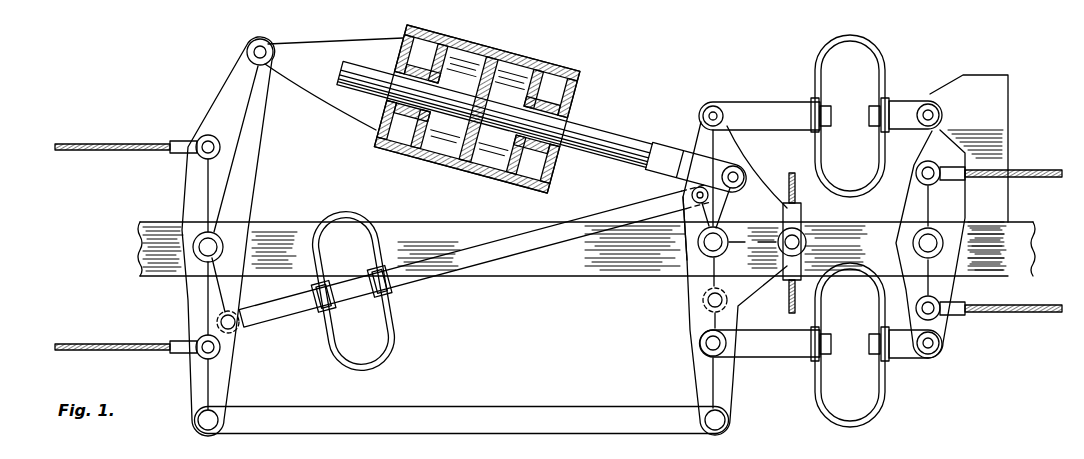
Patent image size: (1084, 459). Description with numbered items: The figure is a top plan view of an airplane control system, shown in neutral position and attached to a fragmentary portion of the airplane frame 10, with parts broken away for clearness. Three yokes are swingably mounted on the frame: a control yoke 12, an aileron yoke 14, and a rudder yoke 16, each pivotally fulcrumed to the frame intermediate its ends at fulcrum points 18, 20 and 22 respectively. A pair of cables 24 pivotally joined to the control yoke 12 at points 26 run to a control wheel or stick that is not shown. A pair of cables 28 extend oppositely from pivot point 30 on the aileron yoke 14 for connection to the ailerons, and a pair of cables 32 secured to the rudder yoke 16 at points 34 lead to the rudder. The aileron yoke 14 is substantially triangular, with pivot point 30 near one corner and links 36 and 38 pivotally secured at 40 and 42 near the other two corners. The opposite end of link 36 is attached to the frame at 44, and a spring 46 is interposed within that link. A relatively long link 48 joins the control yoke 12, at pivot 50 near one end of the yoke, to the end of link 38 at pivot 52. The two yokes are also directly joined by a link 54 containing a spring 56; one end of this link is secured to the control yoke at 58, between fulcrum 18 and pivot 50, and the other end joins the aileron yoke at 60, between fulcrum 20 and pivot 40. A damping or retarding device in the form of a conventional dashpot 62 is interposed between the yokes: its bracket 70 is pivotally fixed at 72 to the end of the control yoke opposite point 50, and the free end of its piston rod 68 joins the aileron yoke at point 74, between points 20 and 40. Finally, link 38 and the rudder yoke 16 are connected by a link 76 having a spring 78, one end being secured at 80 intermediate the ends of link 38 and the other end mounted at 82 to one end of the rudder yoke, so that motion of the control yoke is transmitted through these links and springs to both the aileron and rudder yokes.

The frame 10 is at (560, 276).
The control yoke 12 is at (228, 236).
The aileron yoke 14 is at (735, 278).
The rudder yoke 16 is at (930, 244).
The fulcrum point 18 is at (224, 237).
The fulcrum point 20 is at (705, 270).
The fulcrum point 22 is at (944, 244).
The cables 24 is at (74, 151).
The pivot point 26 is at (203, 137).
The cables 28 is at (789, 178).
The pivot point 30 is at (806, 243).
The cables 32 is at (1040, 169).
The pivot point 34 is at (921, 164).
The link 36 is at (742, 102).
The link 38 is at (692, 367).
The pivot point 40 is at (705, 106).
The pivot point 42 is at (702, 306).
The pivot point 44 is at (925, 104).
The spring 46 is at (850, 116).
The link 48 is at (553, 434).
The pivot point 50 is at (215, 414).
The pivot point 52 is at (735, 420).
The link 54 is at (437, 278).
The spring 56 is at (353, 291).
The pivot point 58 is at (240, 332).
The pivot point 60 is at (678, 194).
The dashpot 62 is at (477, 113).
The piston rod 68 is at (599, 129).
The bracket 70 is at (333, 98).
The pivot point 72 is at (268, 47).
The pivot point 74 is at (742, 165).
The link 76 is at (905, 360).
The spring 78 is at (850, 345).
The pivot point 80 is at (727, 352).
The pivot point 82 is at (942, 352).